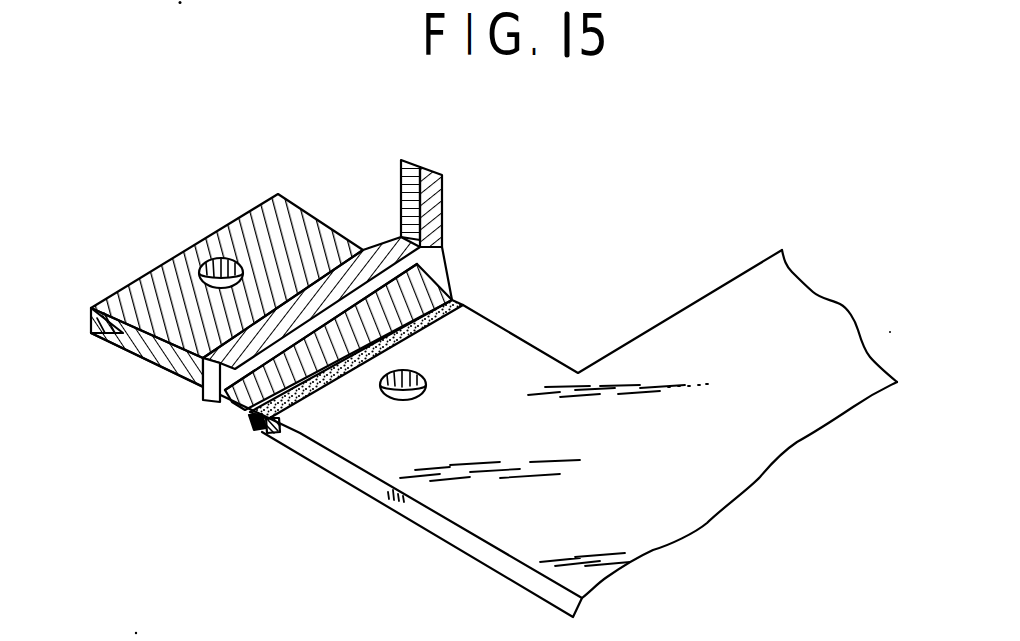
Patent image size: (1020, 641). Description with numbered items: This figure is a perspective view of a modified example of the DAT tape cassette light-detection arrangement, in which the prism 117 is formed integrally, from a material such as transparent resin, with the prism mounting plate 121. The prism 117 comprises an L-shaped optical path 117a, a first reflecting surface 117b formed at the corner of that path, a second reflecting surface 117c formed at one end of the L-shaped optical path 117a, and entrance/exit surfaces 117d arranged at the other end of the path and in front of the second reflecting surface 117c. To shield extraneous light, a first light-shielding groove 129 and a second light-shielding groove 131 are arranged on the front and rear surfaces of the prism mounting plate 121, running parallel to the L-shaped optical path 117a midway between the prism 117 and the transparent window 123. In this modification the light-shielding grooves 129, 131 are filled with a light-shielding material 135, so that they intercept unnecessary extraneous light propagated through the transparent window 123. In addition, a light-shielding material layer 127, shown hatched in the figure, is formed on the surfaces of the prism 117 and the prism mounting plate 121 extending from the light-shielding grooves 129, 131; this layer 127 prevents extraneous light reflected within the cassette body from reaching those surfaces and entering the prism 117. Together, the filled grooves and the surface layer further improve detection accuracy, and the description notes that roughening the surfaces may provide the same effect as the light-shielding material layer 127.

The prism 117 is at (358, 281).
The L-shaped optical path 117a is at (406, 158).
The first reflecting surface 117b is at (440, 262).
The second reflecting surface 117c is at (437, 173).
The entrance/exit surfaces 117d is at (212, 385).
The prism mounting plate 121 is at (118, 345).
The transparent window 123 is at (728, 452).
The light-shielding material layer 127 is at (262, 222).
The first light-shielding groove 129 is at (253, 428).
The second light-shielding groove 131 is at (450, 322).
The light-shielding material 135 is at (463, 303).